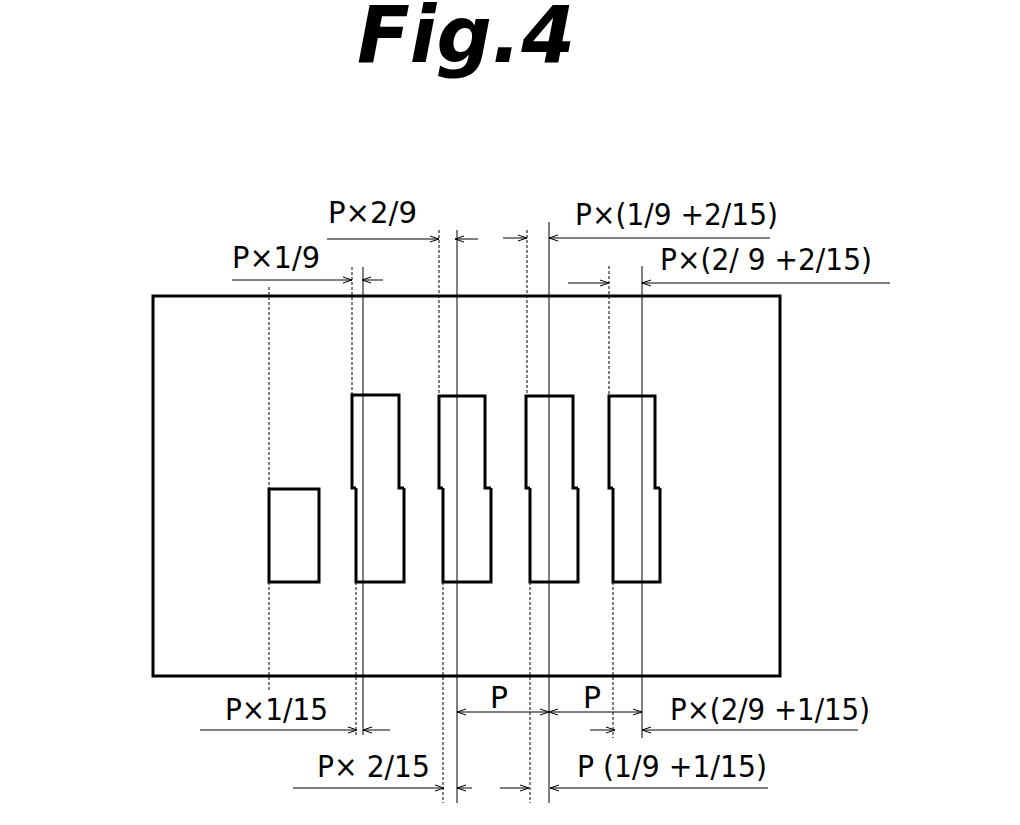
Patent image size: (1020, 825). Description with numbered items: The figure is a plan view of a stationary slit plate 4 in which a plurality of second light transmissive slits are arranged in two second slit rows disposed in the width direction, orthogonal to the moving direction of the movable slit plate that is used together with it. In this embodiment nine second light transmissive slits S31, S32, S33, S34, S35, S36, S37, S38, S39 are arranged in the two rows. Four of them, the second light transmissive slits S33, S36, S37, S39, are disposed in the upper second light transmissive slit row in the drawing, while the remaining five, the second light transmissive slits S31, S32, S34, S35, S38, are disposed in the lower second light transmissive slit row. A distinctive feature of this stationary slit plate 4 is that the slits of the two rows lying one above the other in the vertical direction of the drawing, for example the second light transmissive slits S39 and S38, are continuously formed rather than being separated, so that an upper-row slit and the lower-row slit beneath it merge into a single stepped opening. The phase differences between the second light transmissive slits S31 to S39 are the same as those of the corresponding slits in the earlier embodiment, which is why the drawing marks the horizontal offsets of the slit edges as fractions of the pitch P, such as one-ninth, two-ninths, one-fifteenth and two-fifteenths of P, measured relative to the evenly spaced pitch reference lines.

The stationary slit plate 4 is at (786, 337).
The second light transmissive slit S31 is at (291, 568).
The second light transmissive slit S32 is at (383, 512).
The second light transmissive slit S33 is at (386, 418).
The second light transmissive slit S34 is at (474, 550).
The second light transmissive slit S35 is at (563, 557).
The second light transmissive slit S36 is at (474, 445).
The second light transmissive slit S37 is at (565, 423).
The second light transmissive slit S38 is at (648, 525).
The second light transmissive slit S39 is at (630, 435).